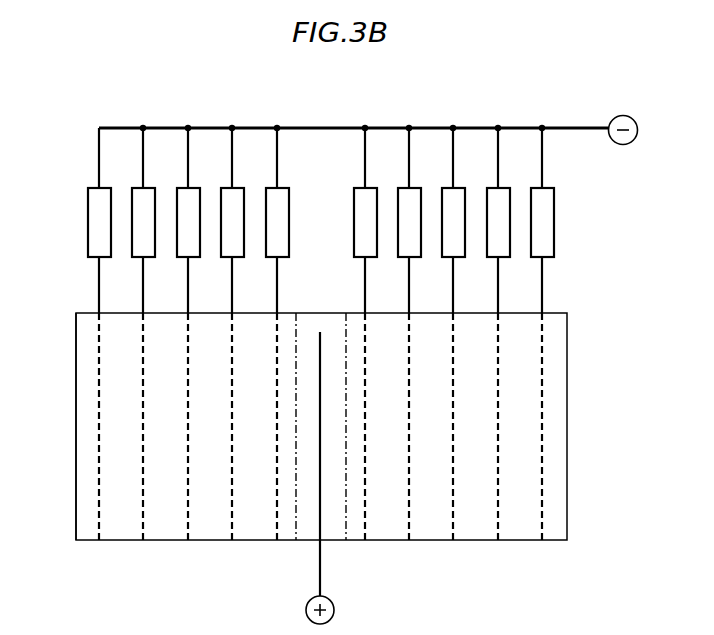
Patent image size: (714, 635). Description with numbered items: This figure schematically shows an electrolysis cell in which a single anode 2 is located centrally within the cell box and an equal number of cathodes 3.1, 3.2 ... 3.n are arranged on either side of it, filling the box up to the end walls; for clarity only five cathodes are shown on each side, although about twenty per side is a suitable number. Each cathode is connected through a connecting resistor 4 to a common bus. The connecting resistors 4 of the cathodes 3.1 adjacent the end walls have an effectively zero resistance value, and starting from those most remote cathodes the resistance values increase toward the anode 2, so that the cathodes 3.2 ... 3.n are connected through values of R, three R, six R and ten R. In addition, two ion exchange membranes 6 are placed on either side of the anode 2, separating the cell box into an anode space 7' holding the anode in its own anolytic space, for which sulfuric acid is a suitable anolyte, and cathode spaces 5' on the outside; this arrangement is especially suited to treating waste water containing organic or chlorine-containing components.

The anode 2 is at (318, 515).
The cathode 3.1 is at (98, 503).
The cathode 3.2 is at (143, 497).
The cathode 3.n is at (366, 500).
The connecting resistor 4 is at (88, 238).
The cathode space 5' is at (570, 404).
The ion exchange membrane 6 is at (296, 497).
The anode space 7' is at (349, 402).